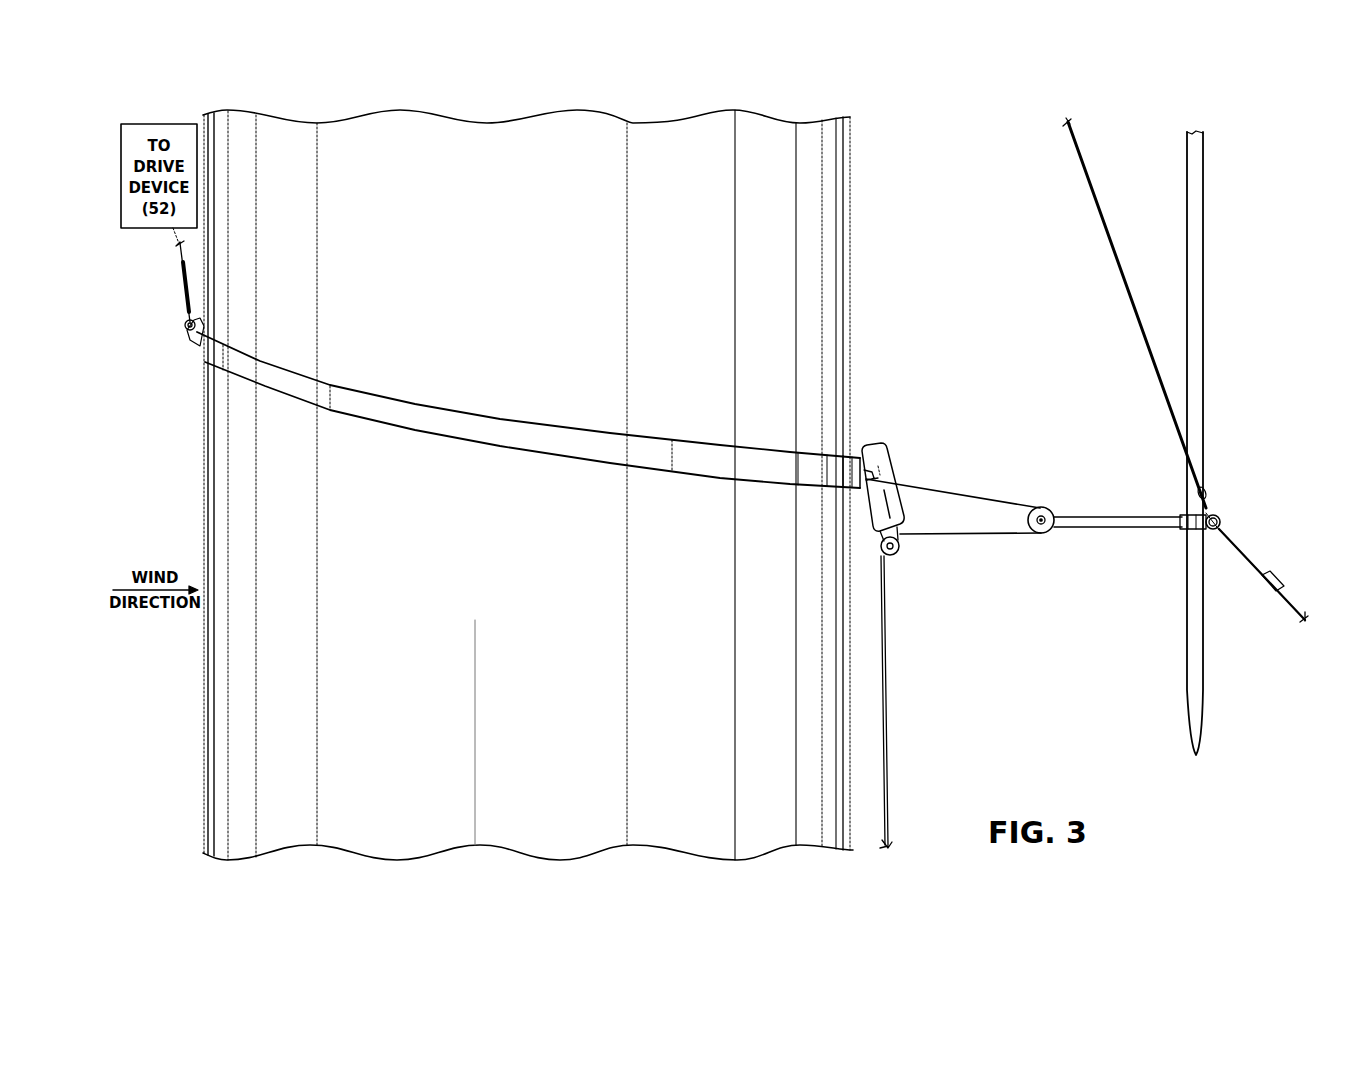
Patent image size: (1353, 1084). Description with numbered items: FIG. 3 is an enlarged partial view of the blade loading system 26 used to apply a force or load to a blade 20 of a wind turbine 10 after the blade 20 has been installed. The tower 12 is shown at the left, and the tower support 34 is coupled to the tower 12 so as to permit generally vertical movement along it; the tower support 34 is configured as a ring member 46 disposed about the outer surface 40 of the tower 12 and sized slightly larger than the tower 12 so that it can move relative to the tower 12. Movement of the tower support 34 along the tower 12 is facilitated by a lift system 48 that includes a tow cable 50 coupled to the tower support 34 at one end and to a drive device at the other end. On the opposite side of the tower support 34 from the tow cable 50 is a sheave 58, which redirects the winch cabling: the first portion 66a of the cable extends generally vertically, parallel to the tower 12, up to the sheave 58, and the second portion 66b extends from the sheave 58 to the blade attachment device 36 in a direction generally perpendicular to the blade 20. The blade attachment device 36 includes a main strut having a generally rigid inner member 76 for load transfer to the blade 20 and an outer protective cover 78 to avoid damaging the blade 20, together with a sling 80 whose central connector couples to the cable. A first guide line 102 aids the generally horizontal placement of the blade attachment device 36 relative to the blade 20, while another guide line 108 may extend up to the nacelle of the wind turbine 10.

The wind turbine 10 is at (186, 455).
The tower 12 is at (201, 482).
The blade 20 is at (1200, 318).
The blade loading system 26 is at (990, 386).
The tower support 34 is at (762, 454).
The blade attachment device 36 is at (1226, 526).
The outer surface of the tower 40 is at (430, 581).
The ring member 46 is at (534, 430).
The lift system 48 is at (173, 302).
The tow cable 50 is at (172, 272).
The sheave 58 is at (898, 553).
The first portion of the cable 66a is at (887, 711).
The second portion of the cable 66b is at (990, 500).
The inner member 76 is at (1216, 514).
The outer protective cover 78 is at (1222, 522).
The sling 80 is at (1105, 520).
The first guide line 102 is at (1292, 612).
The guide line 108 is at (1085, 157).